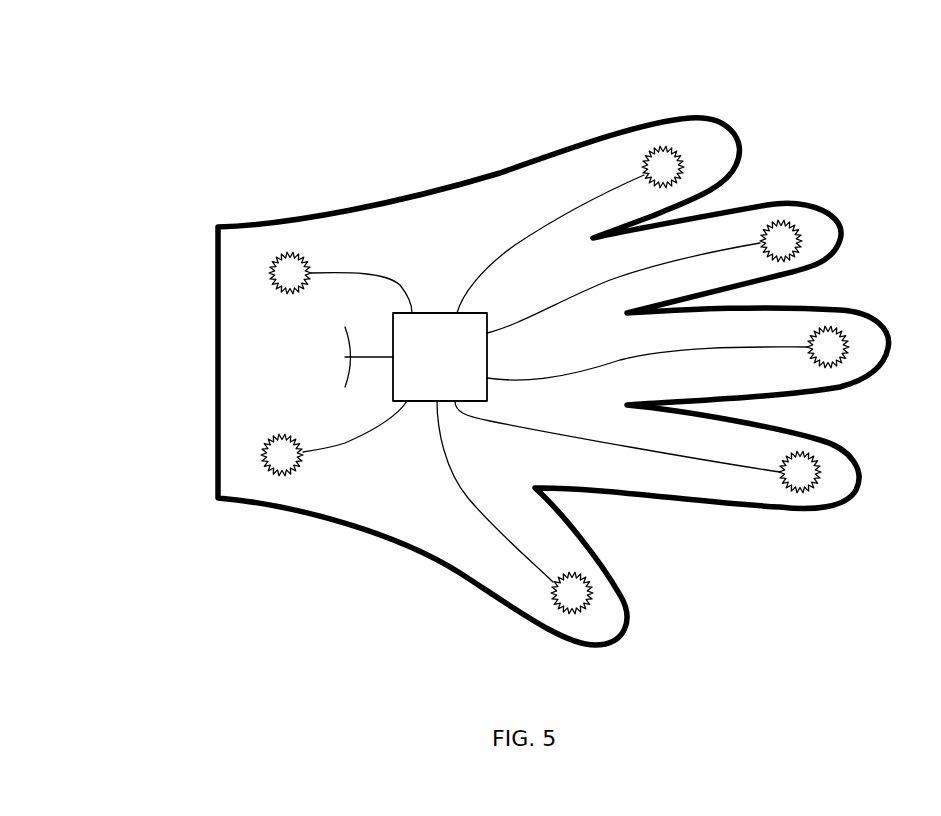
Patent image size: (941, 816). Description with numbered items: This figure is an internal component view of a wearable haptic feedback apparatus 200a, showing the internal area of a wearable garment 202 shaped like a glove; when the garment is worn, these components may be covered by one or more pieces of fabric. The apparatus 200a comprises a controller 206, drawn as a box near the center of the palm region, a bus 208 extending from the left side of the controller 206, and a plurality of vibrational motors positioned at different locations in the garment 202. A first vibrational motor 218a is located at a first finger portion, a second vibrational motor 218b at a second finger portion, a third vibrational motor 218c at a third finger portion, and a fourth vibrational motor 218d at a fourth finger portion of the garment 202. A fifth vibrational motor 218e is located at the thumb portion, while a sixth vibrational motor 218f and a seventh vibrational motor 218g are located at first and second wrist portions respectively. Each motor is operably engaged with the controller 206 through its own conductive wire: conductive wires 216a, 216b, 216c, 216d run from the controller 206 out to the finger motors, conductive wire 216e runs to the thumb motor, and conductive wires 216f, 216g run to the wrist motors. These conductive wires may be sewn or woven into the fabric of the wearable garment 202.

The wearable haptic feedback apparatus 200a is at (118, 114).
The wearable garment 202 is at (402, 188).
The controller 206 is at (436, 312).
The bus 208 is at (374, 355).
The conductive wire 216a is at (519, 243).
The conductive wire 216b is at (571, 296).
The conductive wire 216c is at (588, 367).
The conductive wire 216d is at (597, 441).
The conductive wire 216e is at (470, 490).
The conductive wire 216f is at (346, 445).
The conductive wire 216g is at (360, 272).
The first vibrational motor 218a is at (651, 152).
The second vibrational motor 218b is at (788, 222).
The third vibrational motor 218c is at (838, 330).
The fourth vibrational motor 218d is at (817, 463).
The fifth vibrational motor 218e is at (591, 587).
The sixth vibrational motor 218f is at (275, 474).
The seventh vibrational motor 218g is at (283, 254).